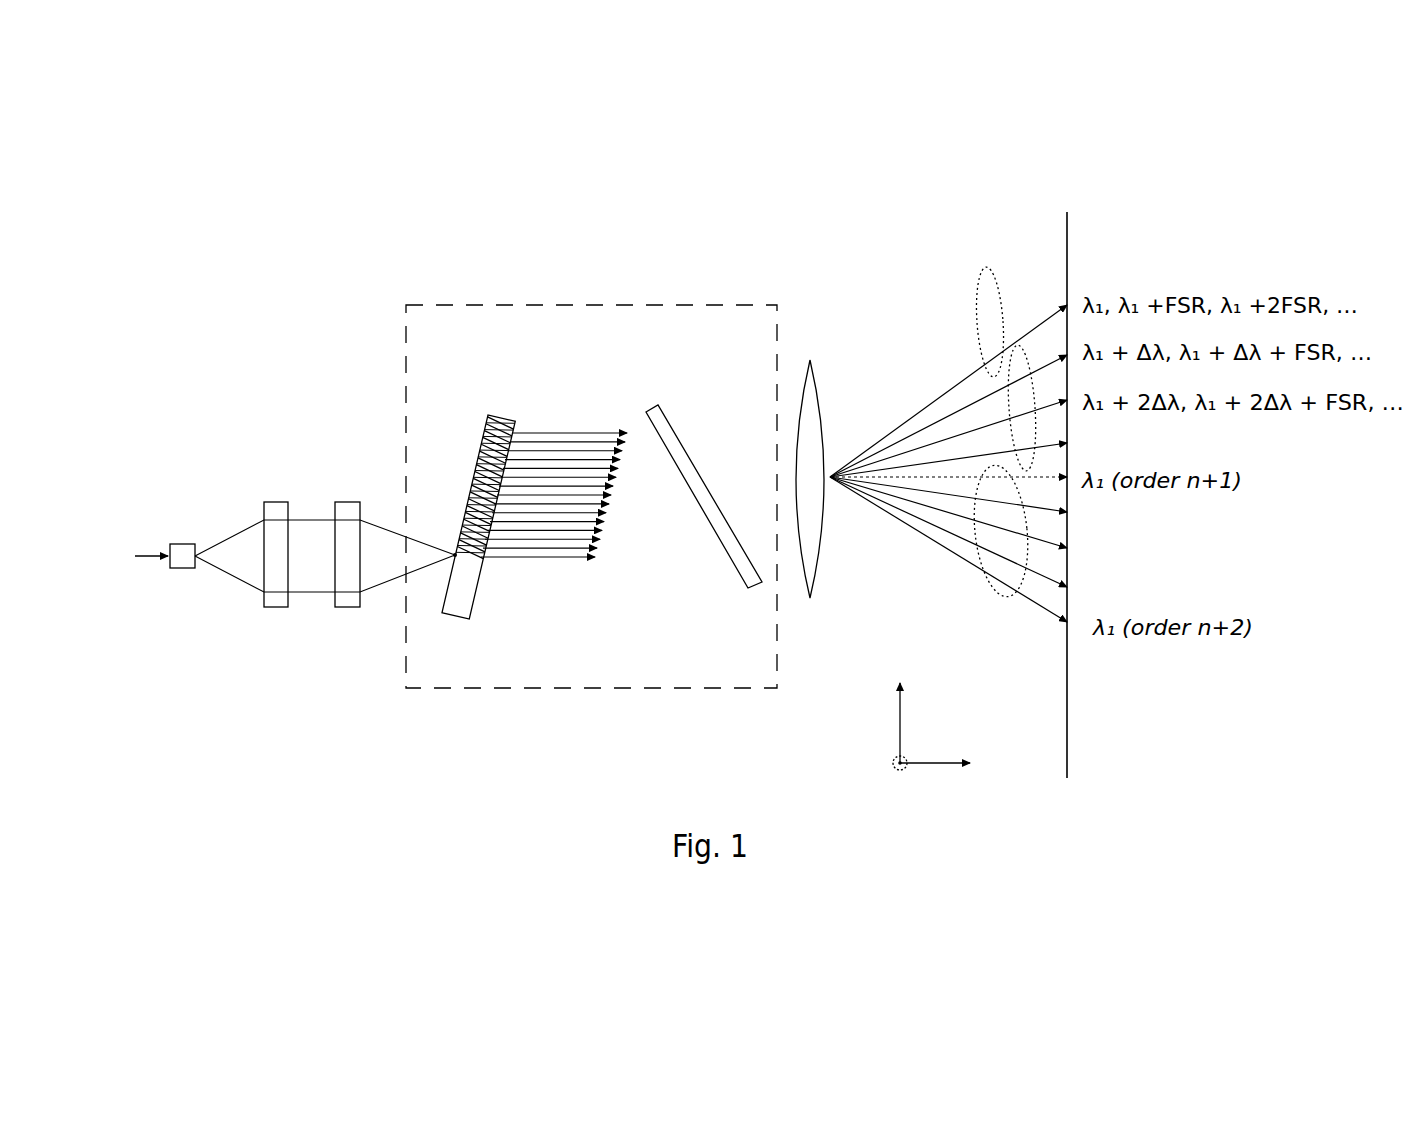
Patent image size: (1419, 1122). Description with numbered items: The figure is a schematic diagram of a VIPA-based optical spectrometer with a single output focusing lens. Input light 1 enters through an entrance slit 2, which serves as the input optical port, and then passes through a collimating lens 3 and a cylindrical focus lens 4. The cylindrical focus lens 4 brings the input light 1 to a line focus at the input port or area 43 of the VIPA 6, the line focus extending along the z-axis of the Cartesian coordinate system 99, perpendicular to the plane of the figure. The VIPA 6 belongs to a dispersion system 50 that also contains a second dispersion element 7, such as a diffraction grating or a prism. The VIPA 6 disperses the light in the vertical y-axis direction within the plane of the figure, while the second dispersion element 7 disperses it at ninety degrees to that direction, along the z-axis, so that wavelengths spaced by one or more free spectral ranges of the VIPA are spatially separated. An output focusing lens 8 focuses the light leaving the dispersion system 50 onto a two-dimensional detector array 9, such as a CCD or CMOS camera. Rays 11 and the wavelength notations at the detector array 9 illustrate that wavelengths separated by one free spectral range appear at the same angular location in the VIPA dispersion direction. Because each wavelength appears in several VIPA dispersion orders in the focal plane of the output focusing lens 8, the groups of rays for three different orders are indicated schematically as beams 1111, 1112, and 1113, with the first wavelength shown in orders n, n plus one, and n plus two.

The input light 1 is at (153, 567).
The entrance slit 2 is at (184, 543).
The collimating lens 3 is at (282, 502).
The cylindrical focus lens 4 is at (347, 502).
The input port or area of the VIPA 43 is at (453, 555).
The dispersion system 50 is at (625, 303).
The VIPA 6 is at (507, 420).
The second dispersion element 7 is at (760, 590).
The output focusing lens 8 is at (810, 598).
The 2D detector array 9 is at (1067, 245).
The rays 11 is at (938, 550).
The beam 111_1 1111 is at (1000, 598).
The beam 111_2 1112 is at (1020, 358).
The beam 111_3 1113 is at (980, 315).
The Cartesian coordinate system 99 is at (880, 755).